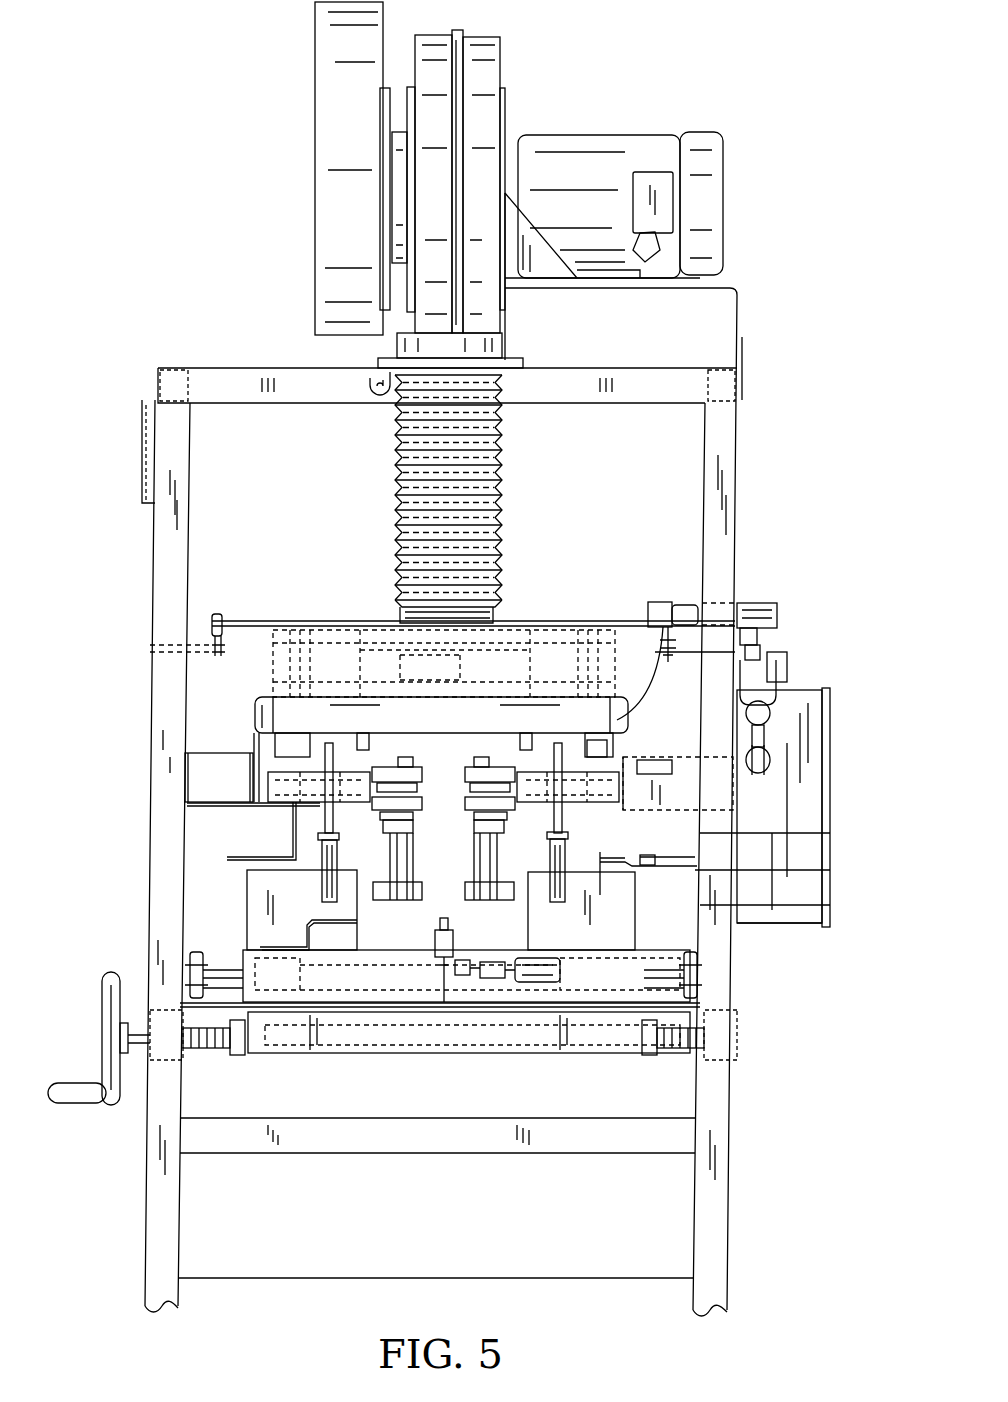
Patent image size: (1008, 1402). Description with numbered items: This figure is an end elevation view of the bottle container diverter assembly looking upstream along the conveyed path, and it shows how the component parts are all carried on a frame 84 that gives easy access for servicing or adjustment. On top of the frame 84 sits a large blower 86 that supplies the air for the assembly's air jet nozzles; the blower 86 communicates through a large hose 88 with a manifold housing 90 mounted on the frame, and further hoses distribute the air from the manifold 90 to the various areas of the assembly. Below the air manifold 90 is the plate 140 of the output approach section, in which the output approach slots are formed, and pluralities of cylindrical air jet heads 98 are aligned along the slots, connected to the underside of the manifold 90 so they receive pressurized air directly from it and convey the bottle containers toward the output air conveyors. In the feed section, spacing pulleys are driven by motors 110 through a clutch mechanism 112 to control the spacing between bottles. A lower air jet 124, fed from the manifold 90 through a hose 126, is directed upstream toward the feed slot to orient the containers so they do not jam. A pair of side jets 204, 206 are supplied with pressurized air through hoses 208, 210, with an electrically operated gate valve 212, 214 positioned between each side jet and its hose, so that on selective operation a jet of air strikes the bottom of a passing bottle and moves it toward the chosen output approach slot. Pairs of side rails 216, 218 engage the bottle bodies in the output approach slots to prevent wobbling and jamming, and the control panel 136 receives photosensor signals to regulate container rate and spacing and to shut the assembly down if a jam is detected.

The frame 84 is at (287, 377).
The blower 86 is at (482, 132).
The hose 88 is at (485, 448).
The manifold housing 90 is at (260, 697).
The air jet heads 98 is at (318, 742).
The motors 110 is at (262, 722).
The clutch mechanism 112 is at (247, 885).
The air jet 124 is at (440, 919).
The hose 126 is at (600, 888).
The control panel 136 is at (782, 811).
The plate 140 is at (252, 750).
The side jet 204 is at (352, 793).
The side jet 206 is at (830, 905).
The hose 208 is at (183, 760).
The hose 210 is at (830, 833).
The gate valve 212 is at (290, 803).
The gate valve 214 is at (830, 870).
The side rails 216 is at (560, 985).
The side rails 218 is at (248, 910).